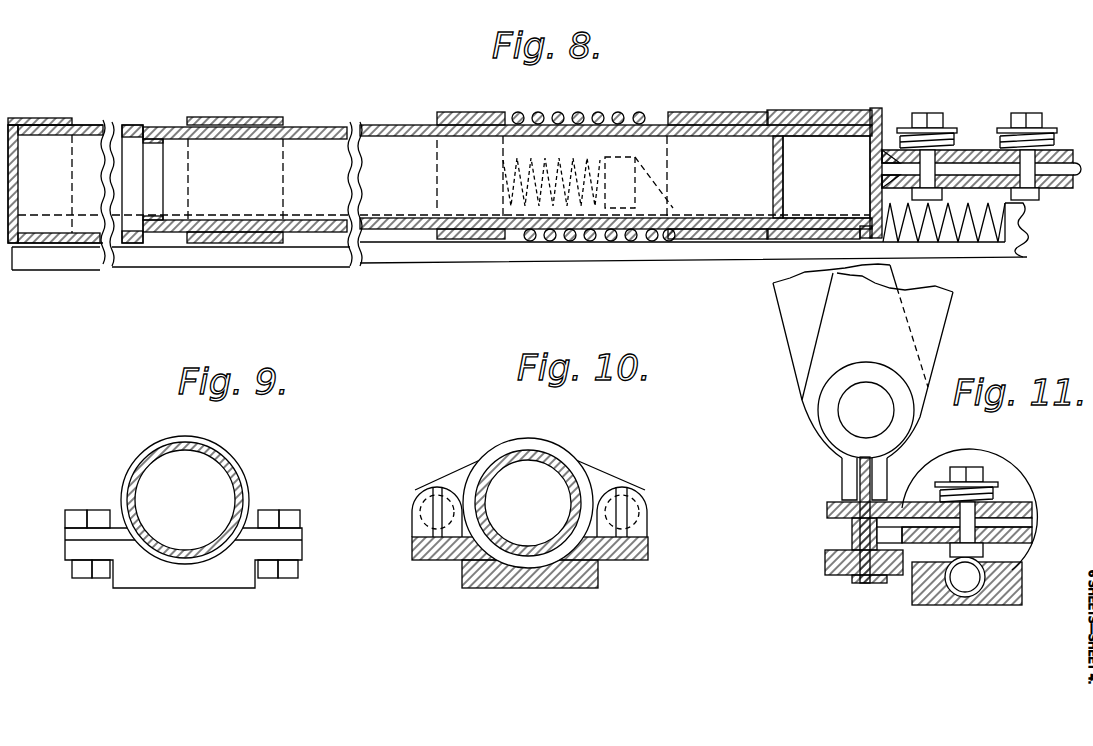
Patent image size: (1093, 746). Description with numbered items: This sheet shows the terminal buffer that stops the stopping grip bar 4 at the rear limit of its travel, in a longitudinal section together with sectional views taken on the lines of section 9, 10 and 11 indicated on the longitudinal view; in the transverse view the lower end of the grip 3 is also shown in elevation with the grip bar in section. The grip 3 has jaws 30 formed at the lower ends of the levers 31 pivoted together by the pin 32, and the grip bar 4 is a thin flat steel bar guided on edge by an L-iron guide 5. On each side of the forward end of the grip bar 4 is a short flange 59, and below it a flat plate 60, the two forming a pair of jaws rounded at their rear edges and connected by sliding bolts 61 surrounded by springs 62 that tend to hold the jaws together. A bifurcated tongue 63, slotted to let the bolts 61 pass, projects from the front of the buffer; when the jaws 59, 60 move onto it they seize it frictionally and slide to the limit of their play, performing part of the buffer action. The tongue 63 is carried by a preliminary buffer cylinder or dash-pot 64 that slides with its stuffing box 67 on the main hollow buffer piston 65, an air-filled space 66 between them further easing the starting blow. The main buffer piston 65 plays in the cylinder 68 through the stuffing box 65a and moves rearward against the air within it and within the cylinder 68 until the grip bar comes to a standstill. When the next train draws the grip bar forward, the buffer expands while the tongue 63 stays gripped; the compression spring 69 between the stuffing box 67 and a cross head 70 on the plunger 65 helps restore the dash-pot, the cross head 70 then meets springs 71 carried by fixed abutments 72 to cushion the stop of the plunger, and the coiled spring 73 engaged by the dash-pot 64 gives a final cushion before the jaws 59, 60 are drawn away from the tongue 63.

In FIG. 11, the grip 3 is at (857, 332).
In FIG. 11, the stopping grip bar 4 is at (862, 485).
In FIG. 11, the L-iron guide 5 is at (835, 550).
In FIG. 8, the section line 9- 9 is at (83, 197).
In FIG. 8, the section line 10- 10 is at (428, 157).
In FIG. 8, the section line 11- 11 is at (1005, 82).
In FIG. 11, the jaw 30 is at (848, 472).
In FIG. 11, the lever 31 is at (795, 317).
In FIG. 11, the pin 32 is at (850, 412).
In FIG. 8, the flange 59 is at (1068, 235).
In FIG. 11, the flange 59 is at (835, 507).
In FIG. 8, the flat plate 60 is at (1041, 236).
In FIG. 11, the flat plate 60 is at (1020, 537).
In FIG. 8, the sliding bolt 61 is at (1033, 200).
In FIG. 8, the spring 62 is at (1000, 140).
In FIG. 11, the spring 62 is at (993, 485).
In FIG. 11, the tongue 63 is at (1020, 522).
In FIG. 8, the preliminary buffer cylinder 64 is at (806, 112).
In FIG. 8, the main hollow buffer piston 65 is at (633, 113).
In FIG. 10, the main hollow buffer piston 65 is at (558, 470).
In FIG. 8, the stuffing box 65a is at (200, 123).
In FIG. 8, the space 66 is at (821, 177).
In FIG. 8, the stuffing box 67 is at (718, 111).
In FIG. 8, the cylinder 68 is at (138, 127).
In FIG. 9, the cylinder 68 is at (214, 454).
In FIG. 8, the compression spring 69 is at (582, 112).
In FIG. 8, the cross head 70 is at (456, 112).
In FIG. 10, the cross head 70 is at (527, 438).
In FIG. 8, the spring 71 is at (512, 195).
In FIG. 8, the fixed abutment 72 is at (625, 200).
In FIG. 10, the fixed abutment 72 is at (413, 522).
In FIG. 8, the coiled spring 73 is at (986, 243).